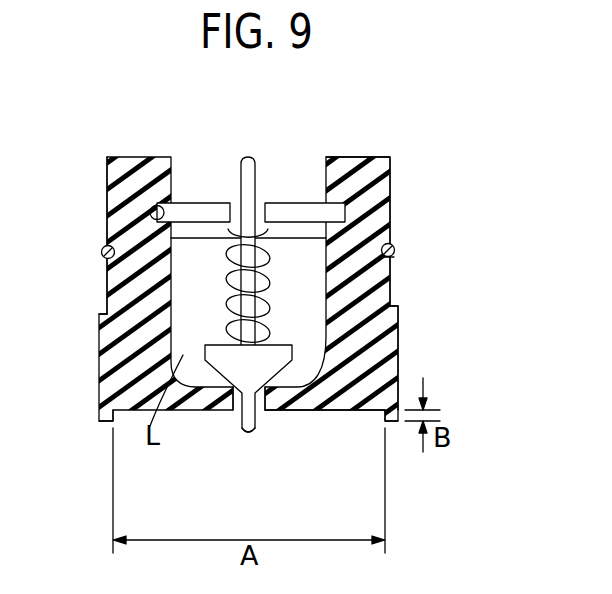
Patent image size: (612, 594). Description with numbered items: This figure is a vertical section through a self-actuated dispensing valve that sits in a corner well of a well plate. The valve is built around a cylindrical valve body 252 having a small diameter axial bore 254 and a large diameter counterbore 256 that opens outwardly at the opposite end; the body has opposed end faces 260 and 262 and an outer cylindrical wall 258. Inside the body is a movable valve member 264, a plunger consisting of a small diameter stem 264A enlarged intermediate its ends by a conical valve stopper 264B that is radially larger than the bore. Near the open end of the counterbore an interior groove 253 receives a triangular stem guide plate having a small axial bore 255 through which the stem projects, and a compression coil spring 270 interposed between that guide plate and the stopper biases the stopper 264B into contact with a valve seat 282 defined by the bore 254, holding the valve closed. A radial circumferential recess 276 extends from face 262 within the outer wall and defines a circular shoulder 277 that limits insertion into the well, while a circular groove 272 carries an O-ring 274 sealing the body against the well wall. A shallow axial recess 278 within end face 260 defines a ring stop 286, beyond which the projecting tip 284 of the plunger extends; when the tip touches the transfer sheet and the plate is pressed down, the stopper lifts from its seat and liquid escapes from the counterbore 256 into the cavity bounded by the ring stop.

The cylindrical valve body 252 is at (382, 172).
The interior groove 253 is at (152, 213).
The axial bore 254 is at (262, 413).
The axial bore of guide plate 255 is at (264, 205).
The counterbore 256 is at (392, 300).
The outer cylindrical wall 258 is at (398, 332).
The end face 260 is at (355, 411).
The end face 262 is at (360, 156).
The movable valve member 264 is at (251, 146).
The stem 264A is at (241, 163).
The conical valve stopper 264B is at (213, 348).
The compression coil spring 270 is at (267, 265).
The circular groove 272 is at (390, 258).
The O-ring 274 is at (391, 246).
The radial circumferential recess 276 is at (107, 280).
The circular shoulder 277 is at (100, 311).
The shallow axial recess 278 is at (113, 422).
The valve seat 282 is at (220, 412).
The projecting tip 284 is at (248, 437).
The ring stop 286 is at (398, 422).